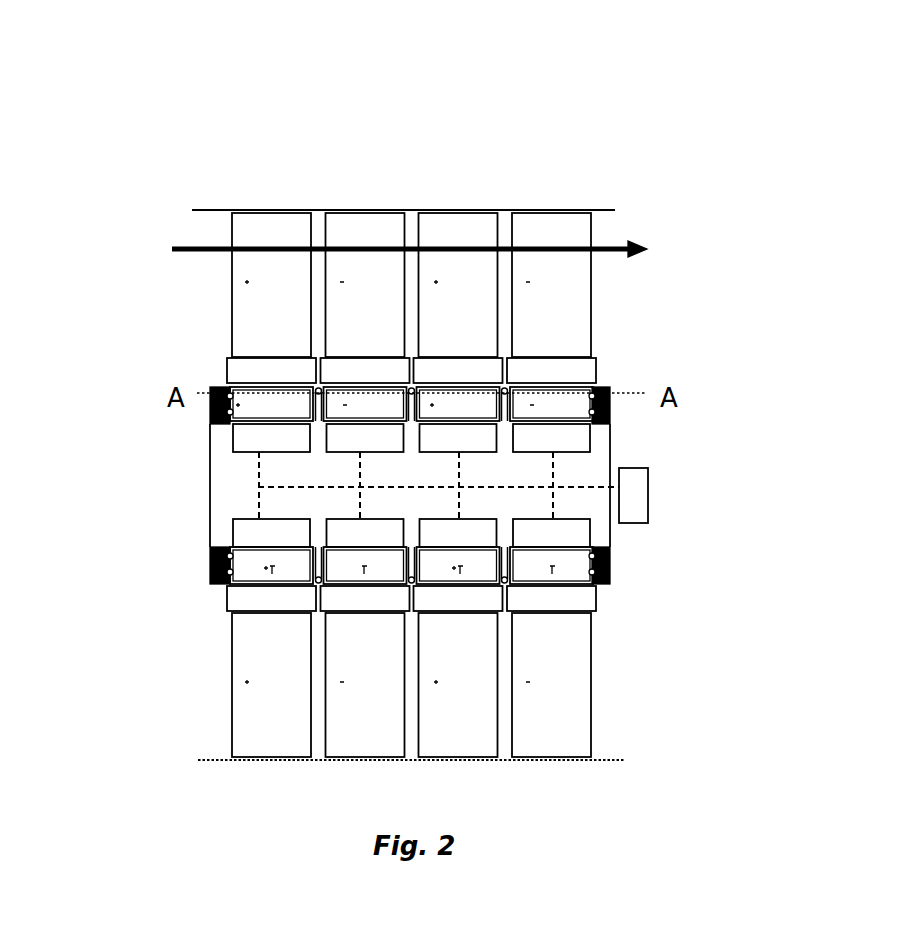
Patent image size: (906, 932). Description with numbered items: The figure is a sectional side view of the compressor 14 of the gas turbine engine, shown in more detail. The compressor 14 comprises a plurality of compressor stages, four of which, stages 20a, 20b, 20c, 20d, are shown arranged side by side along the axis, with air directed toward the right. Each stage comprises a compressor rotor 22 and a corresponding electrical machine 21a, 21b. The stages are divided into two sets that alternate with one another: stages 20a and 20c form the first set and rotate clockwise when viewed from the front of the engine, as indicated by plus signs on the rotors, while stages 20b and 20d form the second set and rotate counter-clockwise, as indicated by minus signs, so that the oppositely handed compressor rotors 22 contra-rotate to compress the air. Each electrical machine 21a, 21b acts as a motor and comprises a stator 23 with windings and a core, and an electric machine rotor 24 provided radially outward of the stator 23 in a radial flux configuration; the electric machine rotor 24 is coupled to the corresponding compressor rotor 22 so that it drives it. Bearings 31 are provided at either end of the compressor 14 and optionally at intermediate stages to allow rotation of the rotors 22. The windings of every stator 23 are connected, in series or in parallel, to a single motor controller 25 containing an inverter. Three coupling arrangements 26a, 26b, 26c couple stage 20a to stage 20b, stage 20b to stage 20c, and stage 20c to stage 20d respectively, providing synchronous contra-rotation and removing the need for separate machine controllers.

The compressor 14 is at (210, 133).
The compressor stage 20a is at (277, 170).
The compressor stage 20b is at (355, 172).
The compressor stage 20c is at (455, 175).
The compressor stage 20d is at (548, 175).
The compressor rotor 22 is at (230, 310).
The electrical machine 21a is at (150, 412).
The electrical machine 21b is at (404, 405).
The electric machine rotor 24 is at (210, 407).
The stator 23 is at (233, 447).
The bearings 31 is at (222, 436).
The motor controller 25 is at (648, 497).
The coupling arrangement 26a is at (312, 573).
The coupling arrangement 26b is at (405, 574).
The coupling arrangement 26c is at (503, 578).